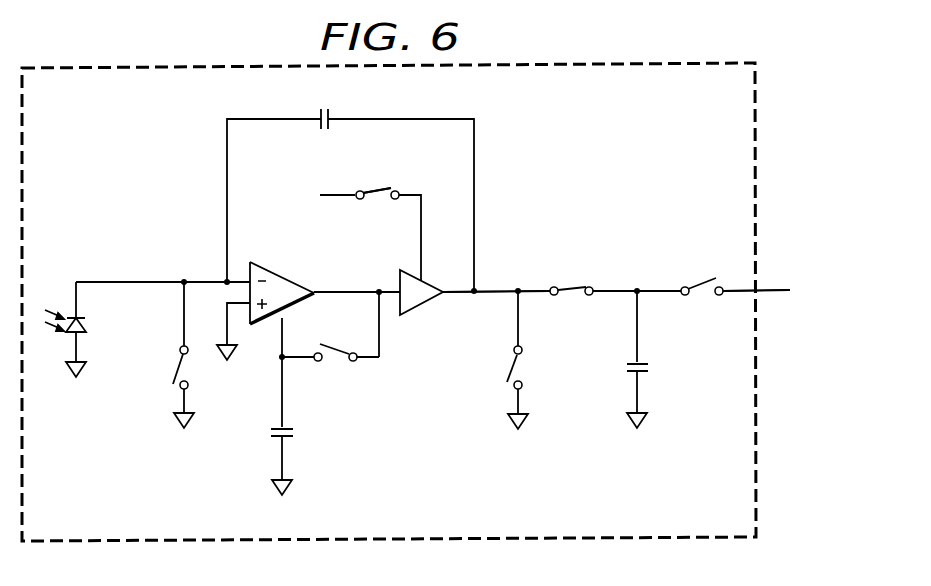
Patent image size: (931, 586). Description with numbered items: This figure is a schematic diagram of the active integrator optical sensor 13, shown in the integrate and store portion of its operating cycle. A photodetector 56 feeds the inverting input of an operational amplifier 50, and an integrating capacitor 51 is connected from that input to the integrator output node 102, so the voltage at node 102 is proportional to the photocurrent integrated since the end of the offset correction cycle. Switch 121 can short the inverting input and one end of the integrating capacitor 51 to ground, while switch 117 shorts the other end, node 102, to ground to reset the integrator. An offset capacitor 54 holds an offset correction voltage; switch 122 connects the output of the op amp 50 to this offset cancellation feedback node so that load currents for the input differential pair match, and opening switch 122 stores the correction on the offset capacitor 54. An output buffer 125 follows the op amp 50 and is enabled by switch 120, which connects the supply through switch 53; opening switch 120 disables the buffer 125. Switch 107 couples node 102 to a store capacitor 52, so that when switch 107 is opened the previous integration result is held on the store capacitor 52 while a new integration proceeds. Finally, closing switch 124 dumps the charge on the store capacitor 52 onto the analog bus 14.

The active integrator optical sensor 13 is at (147, 65).
The analog bus 14 is at (766, 286).
The operational amplifier 50 is at (289, 280).
The integrating capacitor 51 is at (335, 114).
The store capacitor 52 is at (647, 376).
The VCC switch 53 is at (338, 196).
The offset capacitor 54 is at (275, 447).
The photodetector 56 is at (88, 323).
The node 102 is at (482, 283).
The switch 107 is at (574, 296).
The switch 117 is at (524, 370).
The switch 120 is at (378, 198).
The switch 121 is at (188, 375).
The switch 122 is at (338, 362).
The switch 124 is at (702, 297).
The output buffer 125 is at (426, 302).